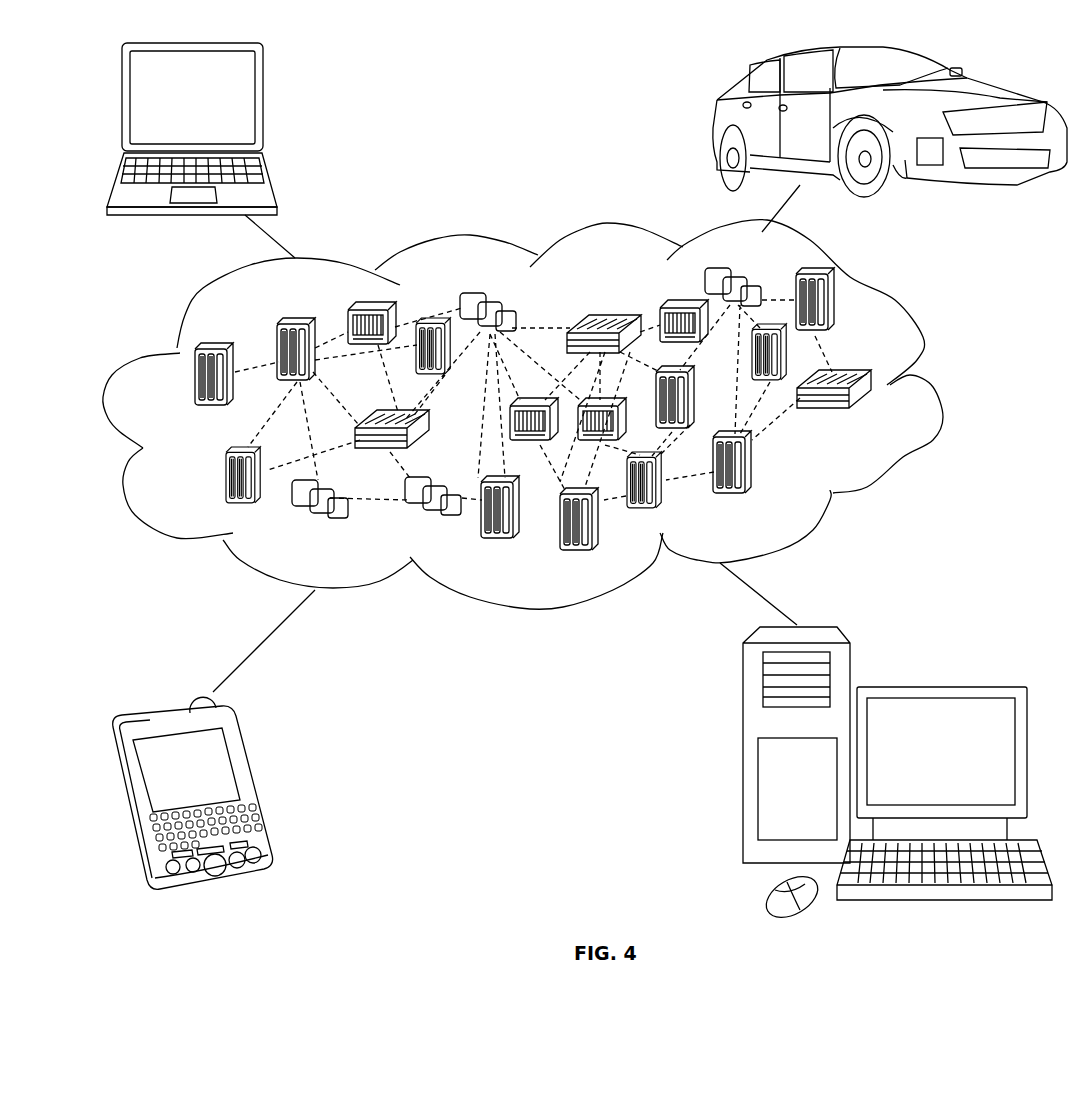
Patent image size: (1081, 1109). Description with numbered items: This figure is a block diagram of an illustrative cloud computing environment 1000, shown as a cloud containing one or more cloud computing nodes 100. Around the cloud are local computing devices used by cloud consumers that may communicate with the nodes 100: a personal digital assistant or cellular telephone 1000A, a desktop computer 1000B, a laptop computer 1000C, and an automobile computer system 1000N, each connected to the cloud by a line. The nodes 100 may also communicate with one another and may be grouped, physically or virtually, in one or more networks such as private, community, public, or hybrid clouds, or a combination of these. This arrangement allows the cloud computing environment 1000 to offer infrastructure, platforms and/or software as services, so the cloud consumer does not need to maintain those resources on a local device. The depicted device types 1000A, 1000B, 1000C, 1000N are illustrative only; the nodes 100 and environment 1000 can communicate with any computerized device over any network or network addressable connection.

The cloud computing environment 1000 is at (563, 415).
The cloud computing nodes 100 is at (880, 420).
The personal digital assistant (PDA) or cellular telephone 1000A is at (258, 781).
The desktop computer 1000B is at (950, 663).
The laptop computer 1000C is at (266, 108).
The automobile computer system 1000N is at (712, 127).